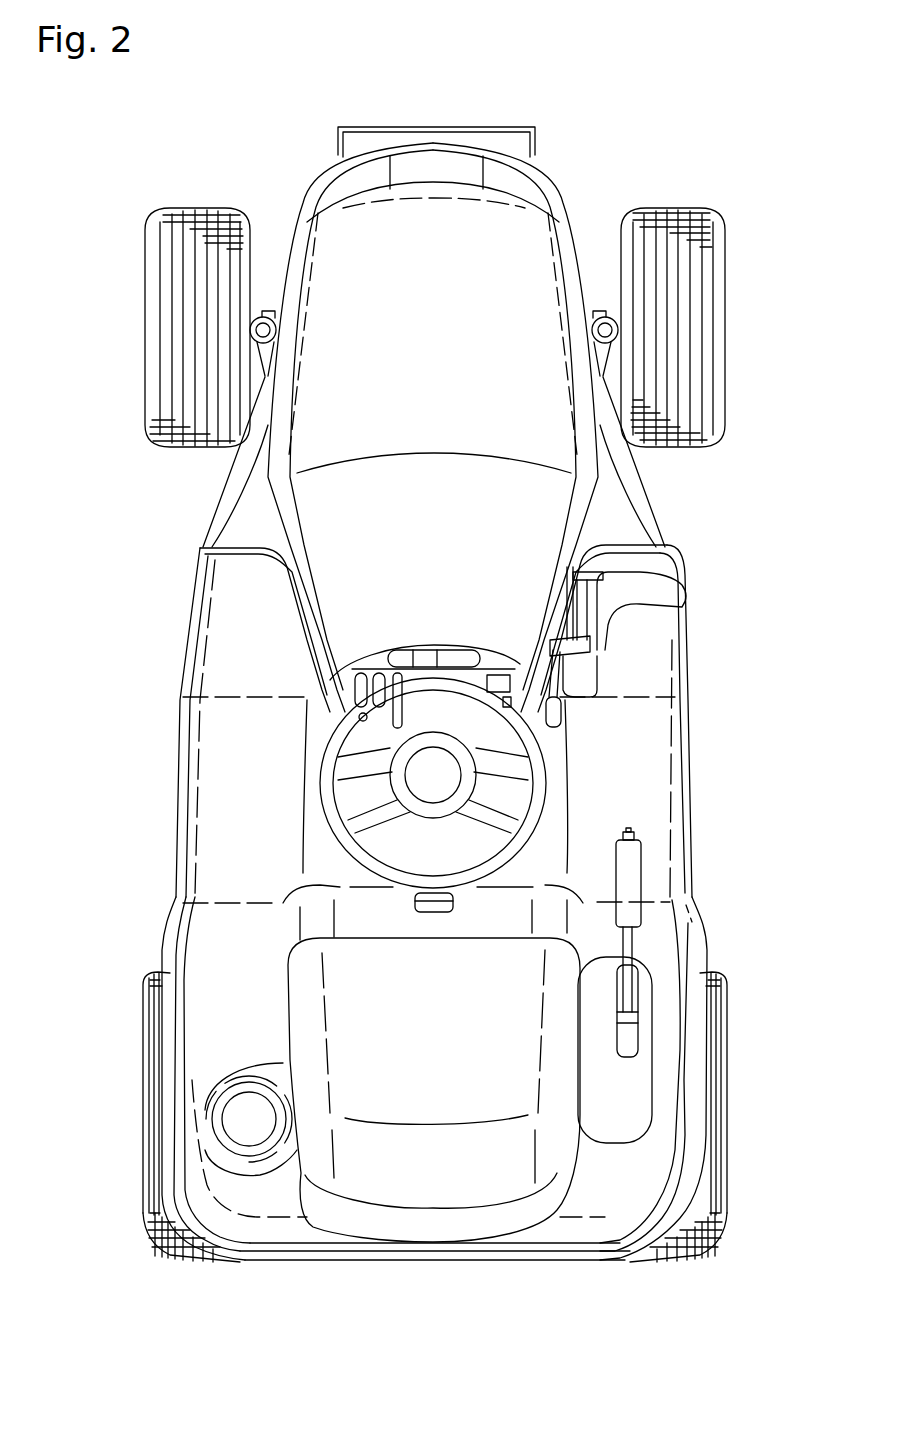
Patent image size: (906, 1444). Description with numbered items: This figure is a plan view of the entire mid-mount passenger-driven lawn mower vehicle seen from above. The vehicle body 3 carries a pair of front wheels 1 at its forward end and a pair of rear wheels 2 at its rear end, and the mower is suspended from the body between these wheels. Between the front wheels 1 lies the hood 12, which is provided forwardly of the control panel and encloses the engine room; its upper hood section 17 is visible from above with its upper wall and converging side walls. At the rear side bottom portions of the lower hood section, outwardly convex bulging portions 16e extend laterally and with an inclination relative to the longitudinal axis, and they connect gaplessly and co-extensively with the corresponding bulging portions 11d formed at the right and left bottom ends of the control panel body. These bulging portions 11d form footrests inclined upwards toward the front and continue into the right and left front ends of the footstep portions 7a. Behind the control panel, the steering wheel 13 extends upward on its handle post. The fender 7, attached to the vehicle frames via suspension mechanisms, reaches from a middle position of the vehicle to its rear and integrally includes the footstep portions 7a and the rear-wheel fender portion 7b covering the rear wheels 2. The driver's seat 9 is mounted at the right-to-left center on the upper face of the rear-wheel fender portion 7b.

The front wheels 1 is at (152, 238).
The rear wheels 2 is at (150, 1147).
The vehicle body 3 is at (155, 677).
The fender 7 is at (697, 822).
The footstep portions 7a is at (650, 745).
The rear-wheel fender portion 7b is at (673, 963).
The driver's seat 9 is at (305, 1007).
The bulging portions 11d is at (242, 520).
The hood 12 is at (538, 232).
The steering wheel 13 is at (322, 785).
The bulging portions 16e is at (238, 476).
The upper hood section 17 is at (343, 266).